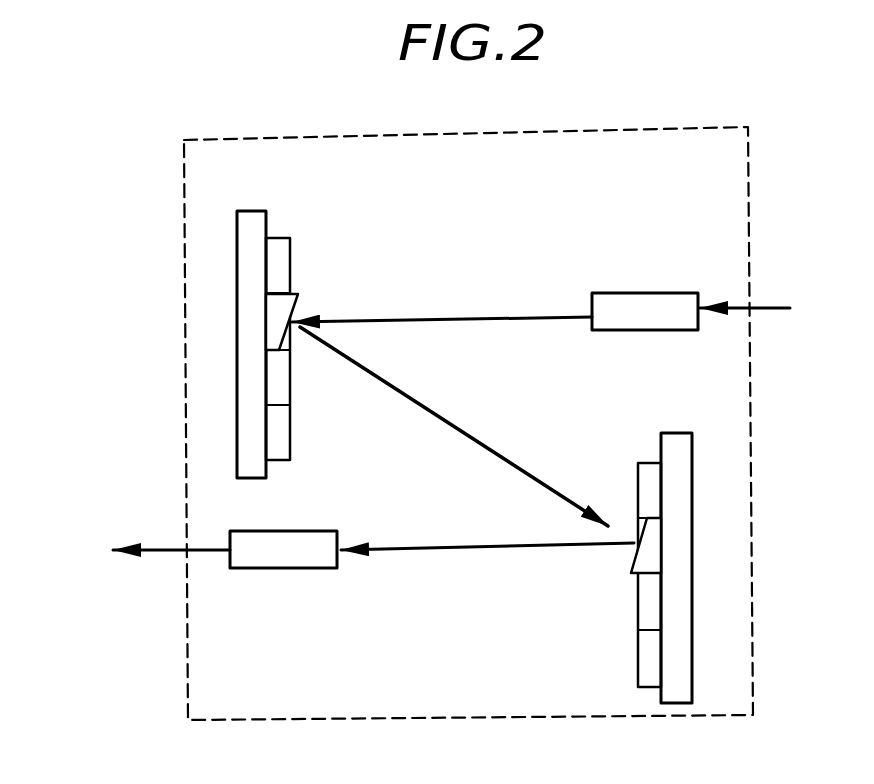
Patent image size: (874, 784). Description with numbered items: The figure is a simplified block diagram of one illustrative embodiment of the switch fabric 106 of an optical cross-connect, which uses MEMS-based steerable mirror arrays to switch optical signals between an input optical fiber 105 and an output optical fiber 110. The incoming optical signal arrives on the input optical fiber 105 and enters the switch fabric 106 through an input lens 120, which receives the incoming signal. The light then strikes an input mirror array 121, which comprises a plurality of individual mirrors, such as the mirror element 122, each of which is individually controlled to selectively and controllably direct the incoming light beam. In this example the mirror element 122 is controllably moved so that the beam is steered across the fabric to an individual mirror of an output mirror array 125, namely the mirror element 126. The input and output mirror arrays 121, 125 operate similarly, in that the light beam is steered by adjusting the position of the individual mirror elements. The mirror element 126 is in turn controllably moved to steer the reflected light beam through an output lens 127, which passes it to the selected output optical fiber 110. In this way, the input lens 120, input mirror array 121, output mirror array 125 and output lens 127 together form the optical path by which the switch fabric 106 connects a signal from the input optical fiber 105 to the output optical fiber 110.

The input optical fiber 105 is at (765, 305).
The switch fabric 106 is at (618, 128).
The output optical fiber 110 is at (163, 550).
The input lens 120 is at (615, 363).
The input mirror array 121 is at (248, 210).
The mirror element 122 is at (290, 313).
The output mirror array 125 is at (693, 432).
The mirror element 126 is at (628, 552).
The output lens 127 is at (286, 531).